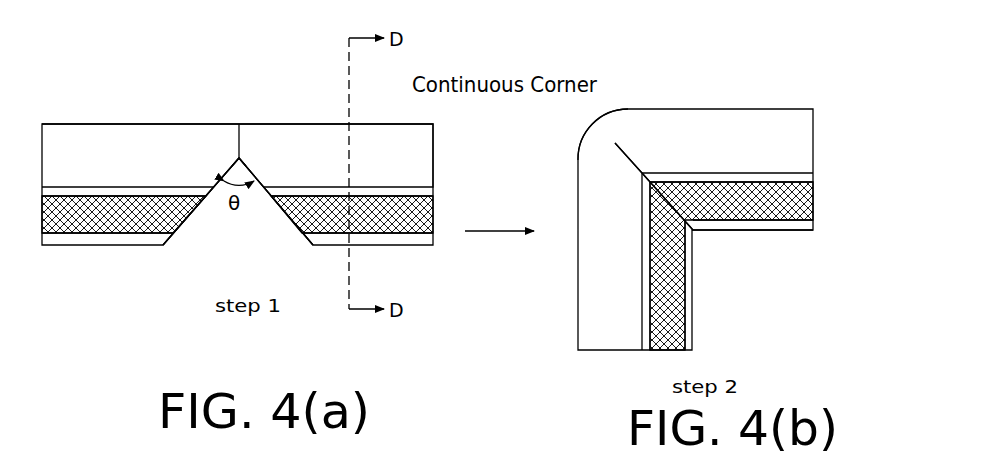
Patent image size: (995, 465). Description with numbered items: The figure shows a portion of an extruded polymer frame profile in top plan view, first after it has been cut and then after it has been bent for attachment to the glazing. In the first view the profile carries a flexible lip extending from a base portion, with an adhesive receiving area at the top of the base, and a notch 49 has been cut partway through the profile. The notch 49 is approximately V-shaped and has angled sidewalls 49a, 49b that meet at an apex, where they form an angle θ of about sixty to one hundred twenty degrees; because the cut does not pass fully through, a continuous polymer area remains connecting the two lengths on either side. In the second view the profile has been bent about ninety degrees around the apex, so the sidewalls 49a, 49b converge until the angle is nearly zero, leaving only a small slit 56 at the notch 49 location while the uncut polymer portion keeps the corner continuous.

The notch 49 is at (253, 218).
The angled sidewall 49a is at (184, 226).
The angled sidewall 49b is at (262, 186).
The slit 56 is at (660, 214).